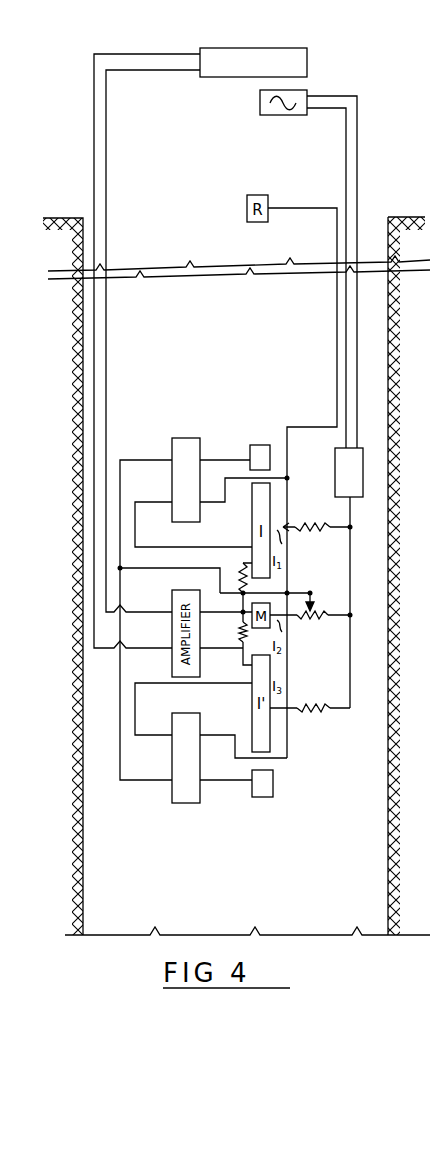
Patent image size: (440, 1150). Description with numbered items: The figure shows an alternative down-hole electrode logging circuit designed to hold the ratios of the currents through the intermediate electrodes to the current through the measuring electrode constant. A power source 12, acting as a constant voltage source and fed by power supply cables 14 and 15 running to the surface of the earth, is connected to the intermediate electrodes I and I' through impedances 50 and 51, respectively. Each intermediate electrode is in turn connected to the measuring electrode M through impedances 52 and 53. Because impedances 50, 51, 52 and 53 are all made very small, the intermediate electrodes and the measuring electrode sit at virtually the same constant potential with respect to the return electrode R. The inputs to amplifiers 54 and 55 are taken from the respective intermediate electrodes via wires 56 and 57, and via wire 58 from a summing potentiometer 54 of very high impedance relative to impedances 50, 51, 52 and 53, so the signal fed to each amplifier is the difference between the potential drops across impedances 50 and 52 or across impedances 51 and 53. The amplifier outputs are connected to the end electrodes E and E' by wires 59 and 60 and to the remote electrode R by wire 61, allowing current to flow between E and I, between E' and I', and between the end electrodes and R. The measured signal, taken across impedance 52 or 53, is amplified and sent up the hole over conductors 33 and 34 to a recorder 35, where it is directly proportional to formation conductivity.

The power source 12 is at (363, 491).
The power supply cable 14 is at (346, 146).
The power supply cable 15 is at (357, 175).
The conductor 33 is at (94, 152).
The conductor 34 is at (106, 183).
The recorder 35 is at (241, 48).
The impedance 50 is at (310, 521).
The impedance 51 is at (322, 700).
The impedance 52 is at (240, 563).
The impedance 53 is at (240, 632).
The amplifier 54 is at (196, 436).
The amplifier 55 is at (197, 804).
The wire 56 is at (210, 547).
The wire 57 is at (206, 683).
The wire 58 is at (121, 472).
The wire 59 is at (224, 458).
The wire 60 is at (238, 781).
The wire 61 is at (287, 440).